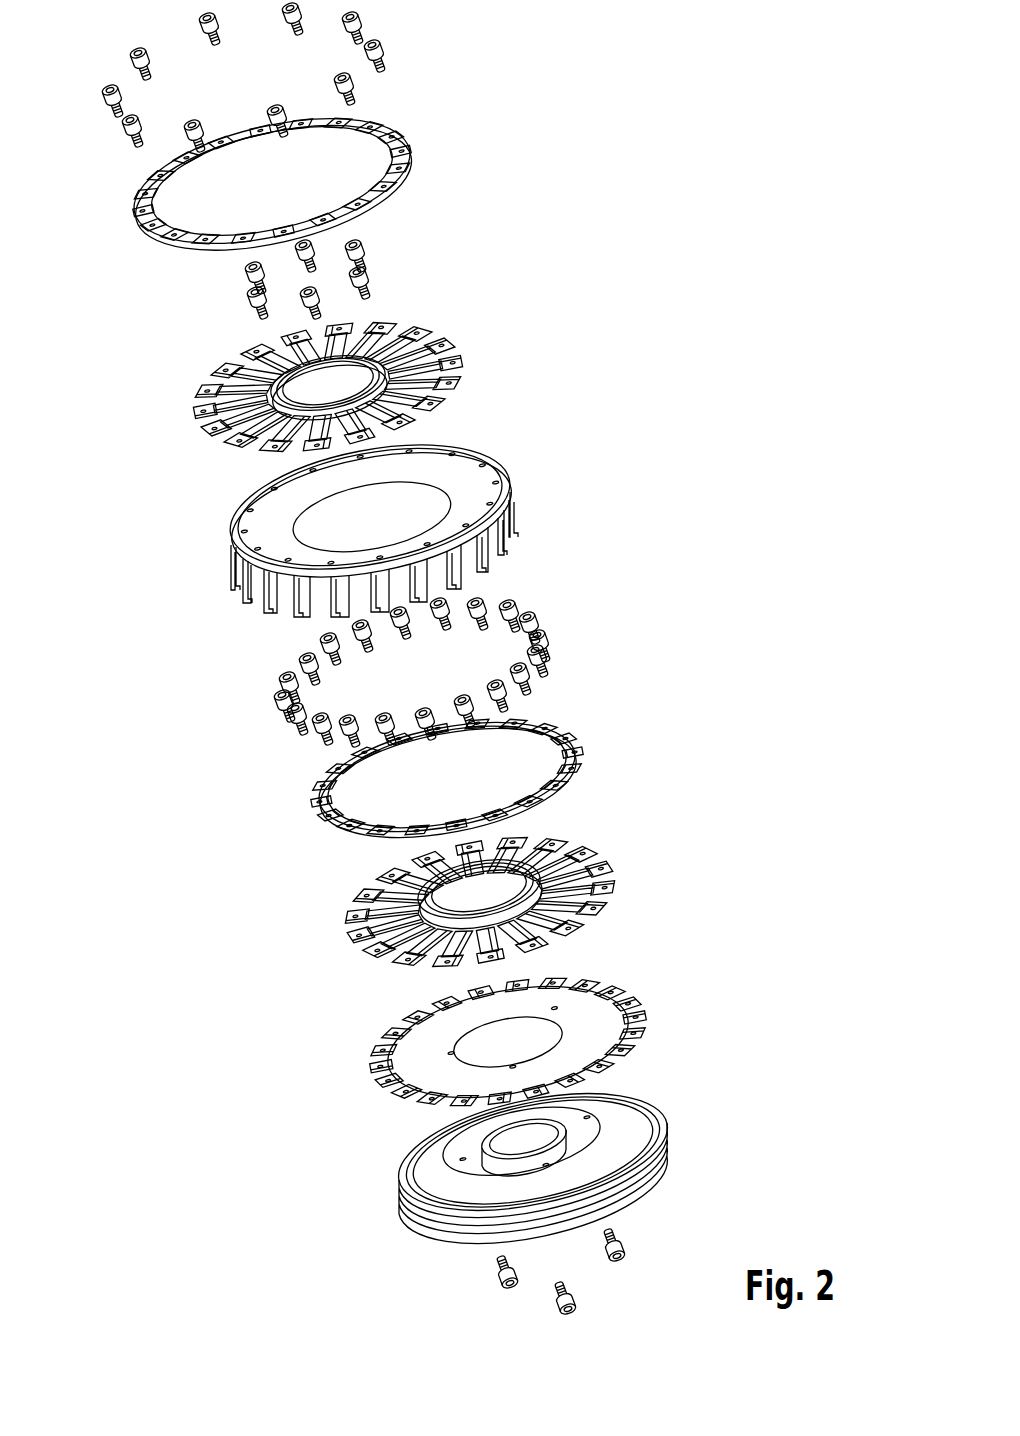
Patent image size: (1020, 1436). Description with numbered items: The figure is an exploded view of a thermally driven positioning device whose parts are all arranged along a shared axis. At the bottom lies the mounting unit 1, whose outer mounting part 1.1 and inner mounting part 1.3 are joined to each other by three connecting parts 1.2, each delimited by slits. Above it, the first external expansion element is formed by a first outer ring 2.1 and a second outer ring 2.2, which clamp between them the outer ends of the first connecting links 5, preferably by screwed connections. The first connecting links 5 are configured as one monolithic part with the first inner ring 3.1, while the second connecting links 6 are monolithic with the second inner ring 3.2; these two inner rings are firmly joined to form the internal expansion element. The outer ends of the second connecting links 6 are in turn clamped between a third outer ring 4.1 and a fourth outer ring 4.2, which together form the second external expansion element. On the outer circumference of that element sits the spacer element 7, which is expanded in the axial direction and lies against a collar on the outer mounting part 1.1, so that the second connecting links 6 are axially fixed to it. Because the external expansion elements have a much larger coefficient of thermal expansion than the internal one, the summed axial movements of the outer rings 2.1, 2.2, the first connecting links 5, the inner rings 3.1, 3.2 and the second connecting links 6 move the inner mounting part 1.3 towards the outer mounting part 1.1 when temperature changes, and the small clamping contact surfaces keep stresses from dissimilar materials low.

The mounting unit 1 is at (467, 1168).
The outer mounting part 1.1 is at (455, 1198).
The connecting parts 1.2 is at (453, 1198).
The inner mounting part 1.3 is at (467, 1222).
The first outer ring 2.1 is at (608, 1017).
The second outer ring 2.2 is at (560, 730).
The first inner ring 3.1 is at (527, 865).
The second inner ring 3.2 is at (383, 357).
The third outer ring 4.1 is at (463, 485).
The fourth outer ring 4.2 is at (402, 143).
The first connecting links 5 is at (578, 887).
The second connecting links 6 is at (447, 323).
The spacer element 7 is at (480, 562).